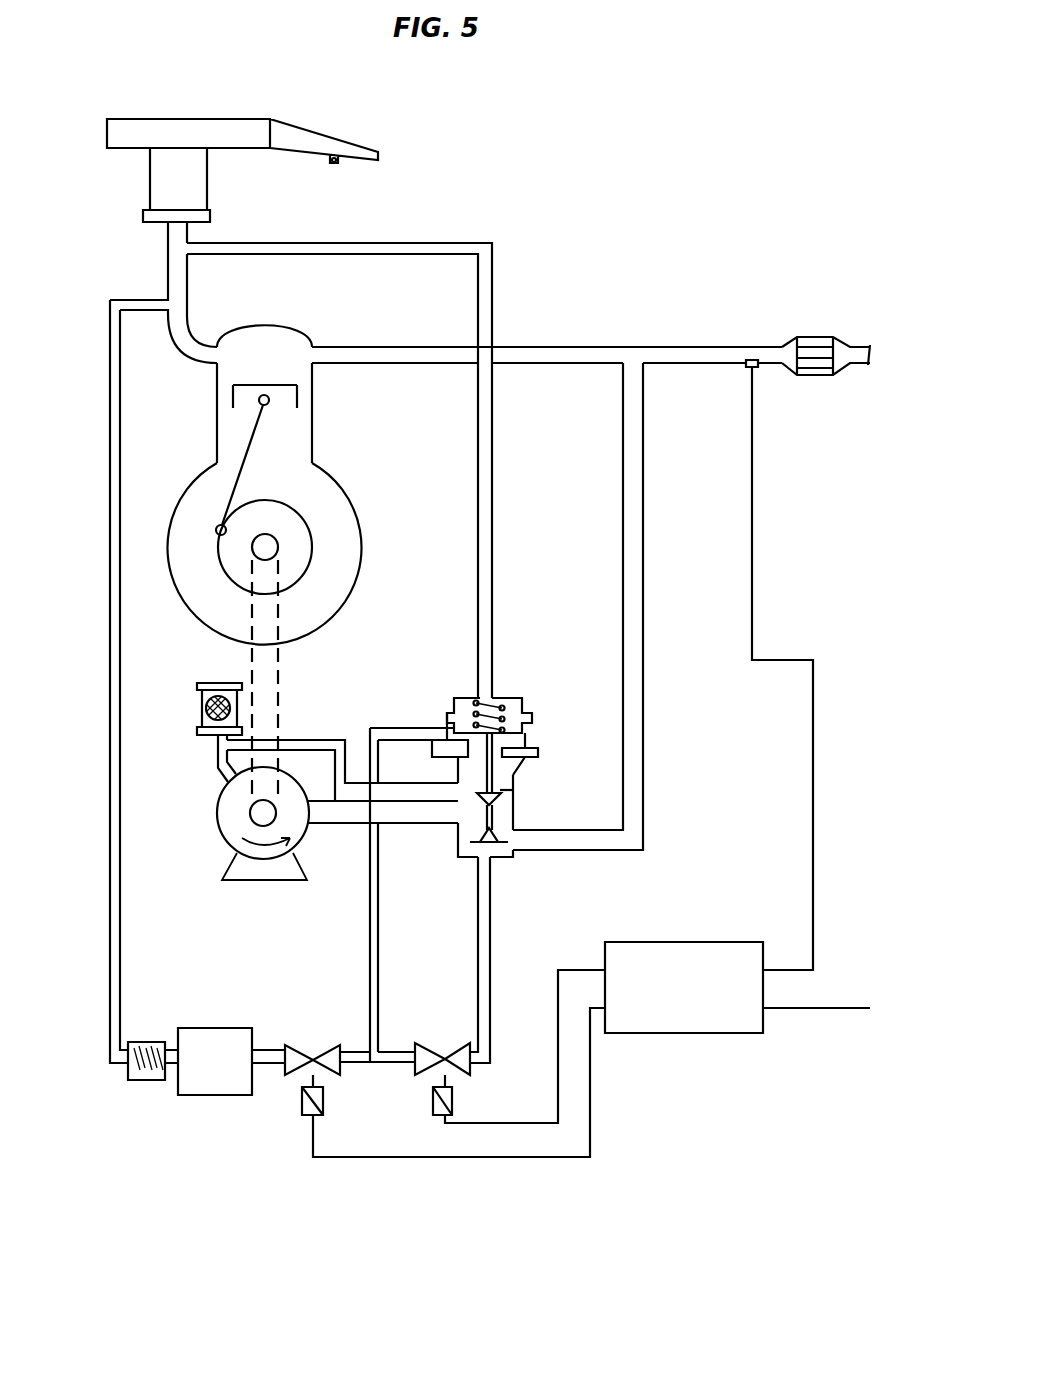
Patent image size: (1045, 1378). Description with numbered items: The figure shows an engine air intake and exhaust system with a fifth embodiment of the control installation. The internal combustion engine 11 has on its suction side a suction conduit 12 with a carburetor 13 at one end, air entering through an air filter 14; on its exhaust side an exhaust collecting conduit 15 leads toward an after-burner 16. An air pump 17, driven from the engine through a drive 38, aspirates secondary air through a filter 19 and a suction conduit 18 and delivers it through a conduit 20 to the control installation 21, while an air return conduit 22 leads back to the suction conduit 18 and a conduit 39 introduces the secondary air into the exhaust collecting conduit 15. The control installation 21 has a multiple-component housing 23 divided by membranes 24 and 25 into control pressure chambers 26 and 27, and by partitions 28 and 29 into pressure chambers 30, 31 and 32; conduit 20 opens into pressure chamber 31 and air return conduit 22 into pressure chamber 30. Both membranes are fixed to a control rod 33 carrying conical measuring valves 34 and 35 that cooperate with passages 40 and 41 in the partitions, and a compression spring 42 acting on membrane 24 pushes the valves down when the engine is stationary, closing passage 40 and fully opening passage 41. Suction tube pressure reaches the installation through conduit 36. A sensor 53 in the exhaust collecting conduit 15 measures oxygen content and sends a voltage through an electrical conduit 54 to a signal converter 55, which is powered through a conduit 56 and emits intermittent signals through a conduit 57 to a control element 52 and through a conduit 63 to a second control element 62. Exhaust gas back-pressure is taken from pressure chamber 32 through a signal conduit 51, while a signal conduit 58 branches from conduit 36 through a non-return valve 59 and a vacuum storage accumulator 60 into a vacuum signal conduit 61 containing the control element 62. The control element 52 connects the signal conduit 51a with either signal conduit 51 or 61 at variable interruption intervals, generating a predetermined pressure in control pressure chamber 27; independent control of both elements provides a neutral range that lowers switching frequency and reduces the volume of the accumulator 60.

The internal combustion engine 11 is at (200, 497).
The suction conduit 12 is at (170, 277).
The carburetor 13 is at (200, 187).
The air filter 14 is at (232, 128).
The exhaust collecting conduit 15 is at (408, 346).
The after-burner 16 is at (820, 345).
The air pump 17 is at (235, 835).
The suction conduit 18 is at (224, 760).
The filter 19 is at (213, 706).
The conduit 20 is at (333, 825).
The control installation 21 is at (492, 659).
The air return conduit 22 is at (330, 748).
The multiple-component housing 23 is at (520, 785).
The membrane 24 is at (470, 705).
The membrane 25 is at (530, 748).
The control pressure chamber 26 is at (525, 706).
The control pressure chamber 27 is at (514, 740).
The partition 28 is at (505, 797).
The partition 29 is at (486, 838).
The pressure chamber 30 is at (455, 770).
The pressure chamber 31 is at (512, 815).
The pressure chamber 32 is at (496, 868).
The control rod 33 is at (487, 738).
The conical measuring valve 34 is at (480, 805).
The conical measuring valve 35 is at (478, 860).
The conduit 36 is at (428, 242).
The drive 38 is at (330, 656).
The conduit 39 is at (642, 640).
The passage 40 is at (480, 800).
The passage 41 is at (498, 836).
The compression spring 42 is at (500, 700).
The signal conduit 51 is at (493, 935).
The signal conduit 51a is at (378, 1000).
The control element 52 is at (476, 1096).
The sensor 53 is at (750, 360).
The electrical conduit 54 is at (753, 510).
The signal converter 55 is at (668, 1034).
The conduit 56 is at (825, 1010).
The conduit 57 is at (557, 1052).
The signal conduit 58 is at (118, 990).
The non-return valve 59 is at (152, 1094).
The vacuum storage accumulator 60 is at (220, 1095).
The vacuum signal conduit 61 is at (268, 1050).
The second control element 62 is at (296, 1098).
The conduit 63 is at (386, 1160).